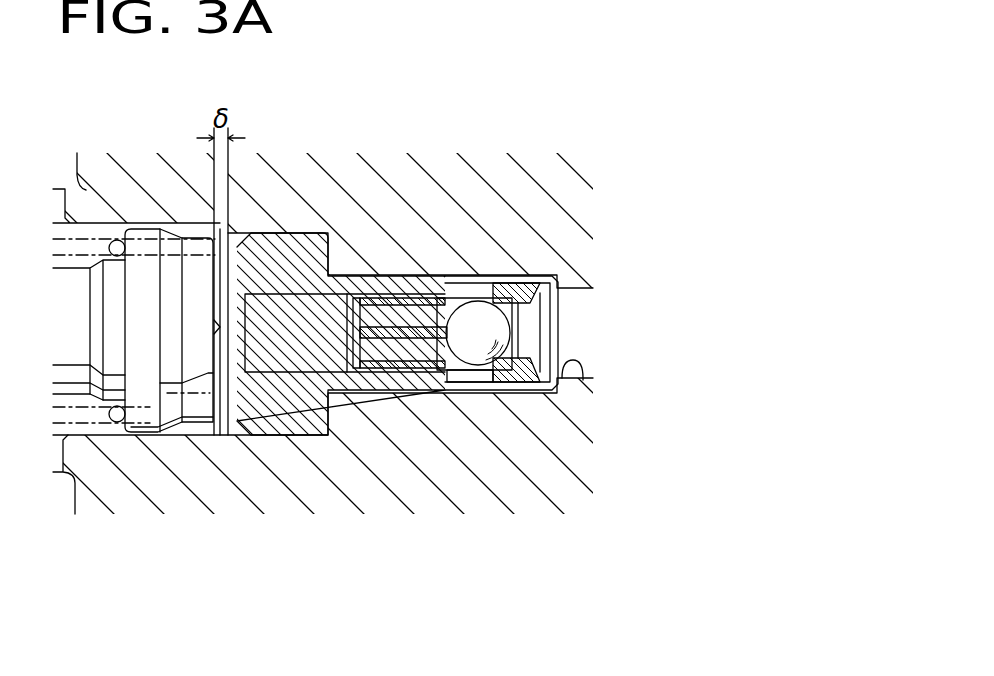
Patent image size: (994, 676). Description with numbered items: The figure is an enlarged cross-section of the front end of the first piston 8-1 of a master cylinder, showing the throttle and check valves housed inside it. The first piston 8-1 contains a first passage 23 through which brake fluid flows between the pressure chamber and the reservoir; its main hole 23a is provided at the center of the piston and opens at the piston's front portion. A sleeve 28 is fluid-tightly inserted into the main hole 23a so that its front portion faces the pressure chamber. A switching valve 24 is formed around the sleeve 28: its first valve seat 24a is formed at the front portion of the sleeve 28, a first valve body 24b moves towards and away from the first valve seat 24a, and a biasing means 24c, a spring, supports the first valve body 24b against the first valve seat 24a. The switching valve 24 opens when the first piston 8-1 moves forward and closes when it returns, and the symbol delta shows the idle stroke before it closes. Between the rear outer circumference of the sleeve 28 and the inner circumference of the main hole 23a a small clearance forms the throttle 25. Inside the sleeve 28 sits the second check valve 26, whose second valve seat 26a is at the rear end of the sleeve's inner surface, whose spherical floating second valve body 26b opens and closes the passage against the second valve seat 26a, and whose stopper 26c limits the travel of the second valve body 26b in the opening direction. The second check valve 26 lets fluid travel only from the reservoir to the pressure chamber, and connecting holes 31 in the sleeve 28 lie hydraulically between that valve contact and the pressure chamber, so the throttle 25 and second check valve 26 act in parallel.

The first piston 8-1 is at (570, 196).
The first passage 23 is at (575, 335).
The main hole 23a is at (583, 380).
The switching valve 24 is at (158, 394).
The first valve seat 24a is at (233, 440).
The first valve body 24b is at (175, 437).
The biasing means 24c is at (134, 416).
The throttle 25 is at (503, 381).
The second check valve 26 is at (452, 314).
The second valve seat 26a is at (504, 298).
The second valve body 26b is at (470, 330).
The stopper 26c is at (404, 327).
The sleeve 28 is at (305, 267).
The connecting holes 31 is at (463, 378).